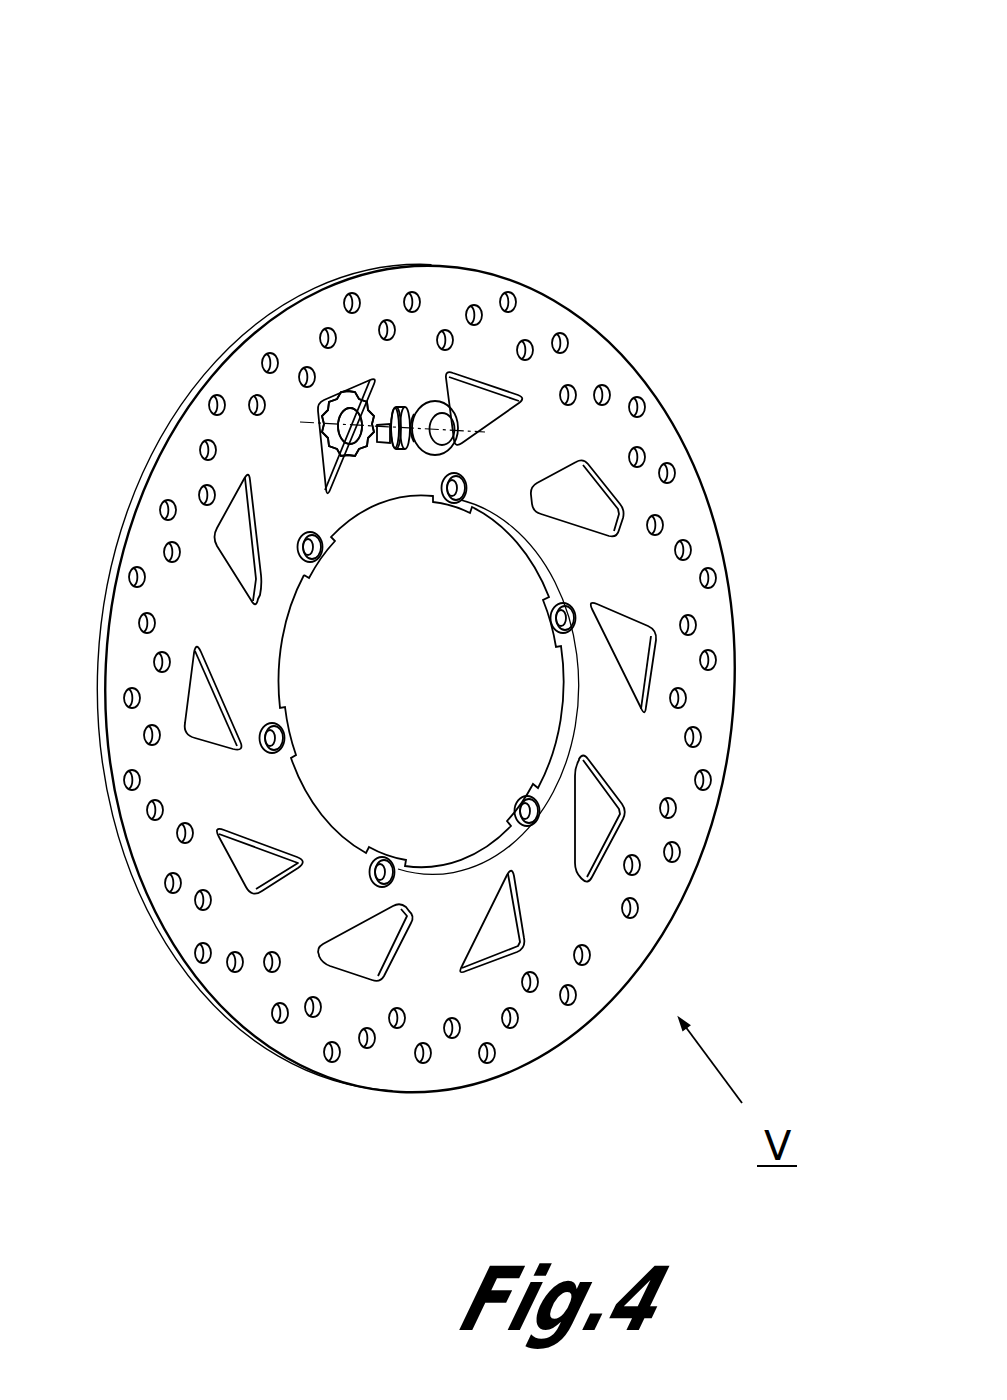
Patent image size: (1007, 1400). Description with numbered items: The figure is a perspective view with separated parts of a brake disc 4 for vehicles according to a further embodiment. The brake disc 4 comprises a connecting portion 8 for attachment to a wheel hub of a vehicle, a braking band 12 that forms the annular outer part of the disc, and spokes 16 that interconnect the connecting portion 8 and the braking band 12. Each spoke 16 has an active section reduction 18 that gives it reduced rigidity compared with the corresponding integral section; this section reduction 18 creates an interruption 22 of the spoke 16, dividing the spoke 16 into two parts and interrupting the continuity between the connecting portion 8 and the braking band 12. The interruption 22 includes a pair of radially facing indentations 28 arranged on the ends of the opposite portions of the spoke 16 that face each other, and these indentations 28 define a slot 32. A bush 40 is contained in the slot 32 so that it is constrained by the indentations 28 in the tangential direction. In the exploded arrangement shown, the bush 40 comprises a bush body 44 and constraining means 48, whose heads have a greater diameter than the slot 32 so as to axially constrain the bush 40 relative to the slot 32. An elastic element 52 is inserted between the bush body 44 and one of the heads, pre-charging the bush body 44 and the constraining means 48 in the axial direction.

The brake disc 4 is at (166, 138).
The connecting portion 8 is at (515, 512).
The braking band 12 is at (697, 505).
The spoke 16 is at (427, 383).
The section reduction 18 is at (350, 435).
The interruption 22 is at (350, 426).
The indentation 28 is at (393, 400).
The slot 32 is at (390, 435).
The bush 40 is at (447, 381).
The bush body 44 is at (462, 421).
The constraining means 48 is at (411, 400).
The elastic element 52 is at (345, 402).